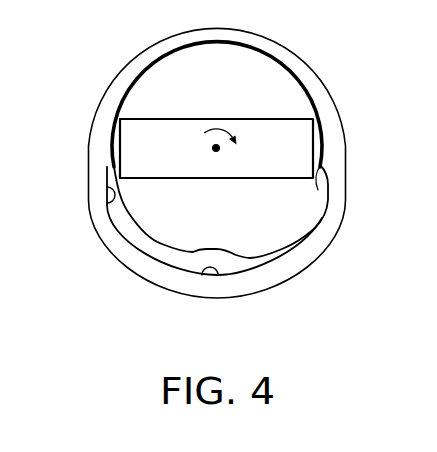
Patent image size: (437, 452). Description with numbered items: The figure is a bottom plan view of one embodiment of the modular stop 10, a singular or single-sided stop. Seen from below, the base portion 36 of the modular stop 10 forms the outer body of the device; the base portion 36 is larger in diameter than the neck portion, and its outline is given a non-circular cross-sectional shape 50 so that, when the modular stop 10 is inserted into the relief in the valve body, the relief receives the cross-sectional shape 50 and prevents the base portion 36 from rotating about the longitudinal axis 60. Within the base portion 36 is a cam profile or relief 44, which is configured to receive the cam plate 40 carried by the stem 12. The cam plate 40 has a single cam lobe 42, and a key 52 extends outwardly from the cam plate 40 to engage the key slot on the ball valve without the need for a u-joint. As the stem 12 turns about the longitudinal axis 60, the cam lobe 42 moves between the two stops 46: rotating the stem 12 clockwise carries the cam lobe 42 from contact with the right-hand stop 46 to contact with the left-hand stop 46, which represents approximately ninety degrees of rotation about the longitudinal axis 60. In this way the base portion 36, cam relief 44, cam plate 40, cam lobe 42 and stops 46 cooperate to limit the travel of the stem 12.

The modular stop 10 is at (87, 56).
The stem 12 is at (248, 134).
The cam plate 40 is at (221, 211).
The base portion 36 is at (315, 77).
The cross-sectional shape 50 is at (346, 126).
The cam lobe 42 is at (275, 232).
The cam profile or relief 44 is at (218, 277).
The stops 46 is at (112, 215).
The key 52 is at (150, 142).
The longitudinal axis 60 is at (216, 150).